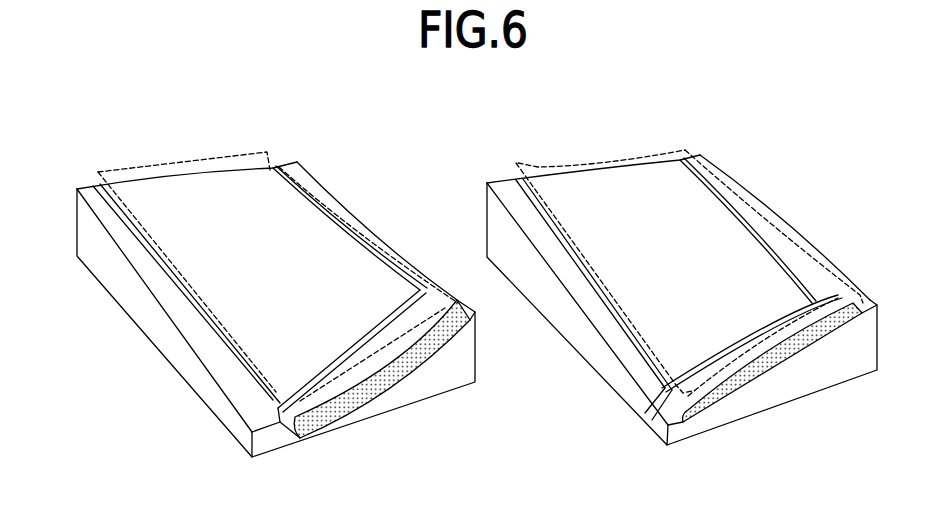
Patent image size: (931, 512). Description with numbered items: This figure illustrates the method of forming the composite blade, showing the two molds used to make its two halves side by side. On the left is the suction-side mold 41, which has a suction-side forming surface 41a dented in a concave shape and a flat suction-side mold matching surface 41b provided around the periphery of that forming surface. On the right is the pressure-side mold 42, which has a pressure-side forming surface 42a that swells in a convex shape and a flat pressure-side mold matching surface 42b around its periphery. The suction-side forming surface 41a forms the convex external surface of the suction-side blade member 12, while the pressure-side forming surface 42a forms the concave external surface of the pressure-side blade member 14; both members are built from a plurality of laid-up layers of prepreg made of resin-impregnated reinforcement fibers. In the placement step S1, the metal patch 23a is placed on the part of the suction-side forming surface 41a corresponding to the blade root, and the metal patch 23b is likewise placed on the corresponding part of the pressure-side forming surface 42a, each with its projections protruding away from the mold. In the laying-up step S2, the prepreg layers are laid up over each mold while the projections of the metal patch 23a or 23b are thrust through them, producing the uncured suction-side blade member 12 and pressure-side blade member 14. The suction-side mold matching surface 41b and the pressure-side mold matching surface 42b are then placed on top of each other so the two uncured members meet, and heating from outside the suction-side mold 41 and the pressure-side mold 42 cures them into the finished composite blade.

The suction-side blade member 12 is at (127, 168).
The pressure-side blade member 14 is at (537, 156).
The suction-side mold 41 is at (250, 248).
The suction-side forming surface 41a is at (183, 193).
The suction-side mold matching surface 41b is at (92, 188).
The pressure-side mold 42 is at (662, 240).
The pressure-side forming surface 42a is at (592, 187).
The pressure-side mold matching surface 42b is at (502, 186).
The metal patch 23a is at (354, 395).
The metal patch 23b is at (732, 398).
The placement step S1 is at (437, 416).
The laying-up step S2 is at (338, 226).